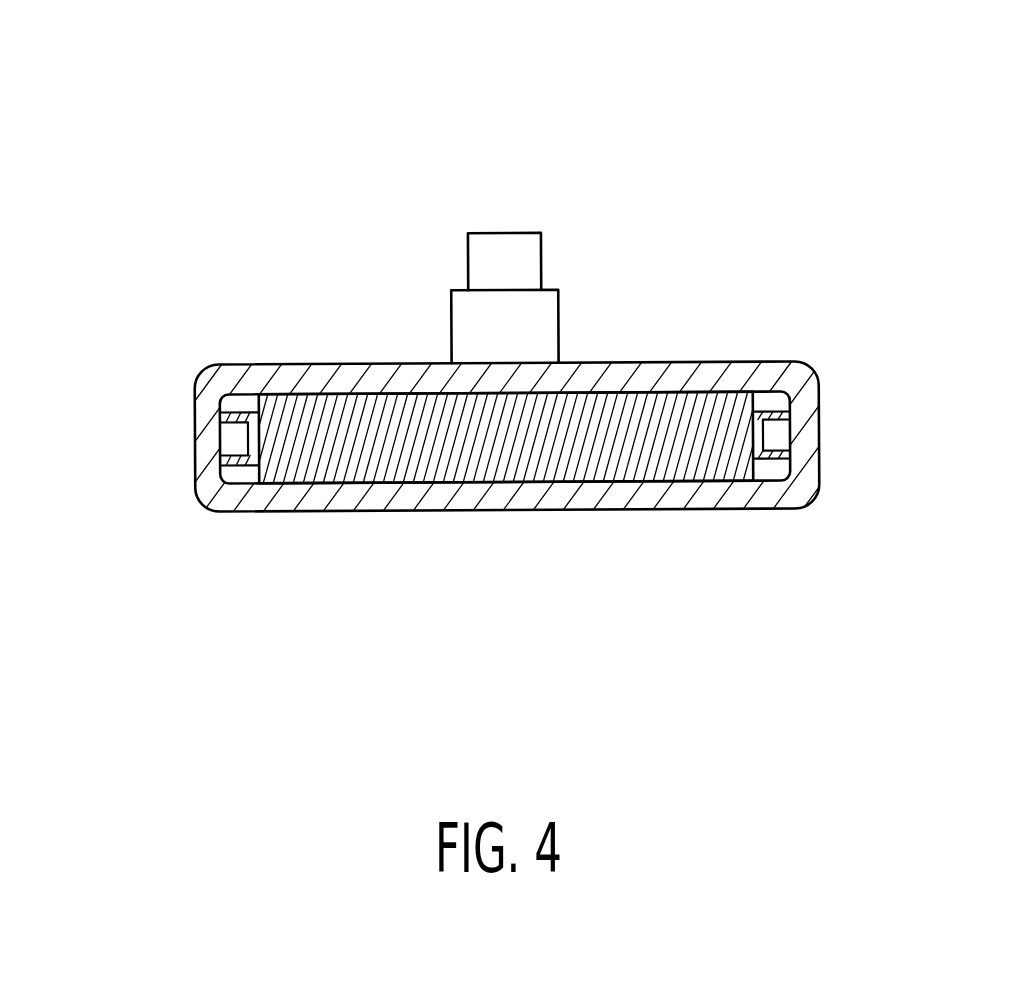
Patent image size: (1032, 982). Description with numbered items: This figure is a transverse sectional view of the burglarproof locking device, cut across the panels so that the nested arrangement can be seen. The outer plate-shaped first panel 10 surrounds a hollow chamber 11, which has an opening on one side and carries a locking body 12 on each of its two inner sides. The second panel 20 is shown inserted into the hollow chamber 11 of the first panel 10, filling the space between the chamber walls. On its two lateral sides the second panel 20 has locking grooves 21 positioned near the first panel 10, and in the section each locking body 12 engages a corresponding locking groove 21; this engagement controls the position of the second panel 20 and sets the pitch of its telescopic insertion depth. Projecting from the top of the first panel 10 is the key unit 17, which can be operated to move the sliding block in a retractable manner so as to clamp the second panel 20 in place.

The first panel 10 is at (515, 497).
The hollow chamber 11 is at (628, 390).
The locking body 12 is at (252, 423).
The key unit 17 is at (495, 268).
The second panel 20 is at (355, 430).
The locking grooves 21 is at (242, 400).